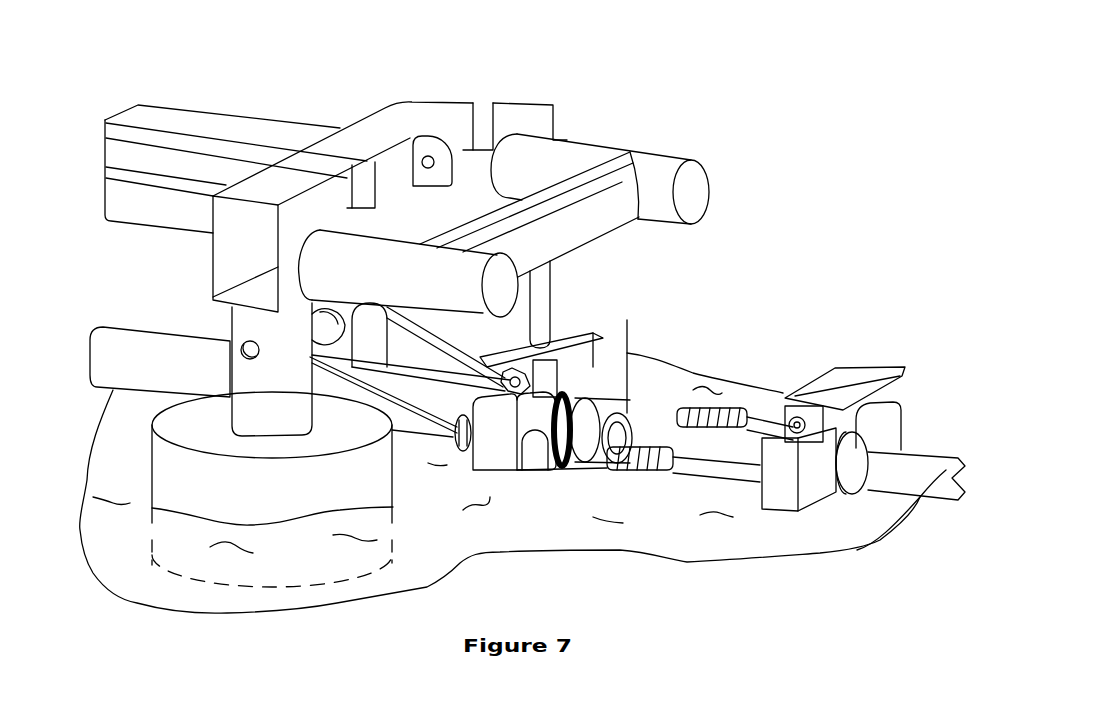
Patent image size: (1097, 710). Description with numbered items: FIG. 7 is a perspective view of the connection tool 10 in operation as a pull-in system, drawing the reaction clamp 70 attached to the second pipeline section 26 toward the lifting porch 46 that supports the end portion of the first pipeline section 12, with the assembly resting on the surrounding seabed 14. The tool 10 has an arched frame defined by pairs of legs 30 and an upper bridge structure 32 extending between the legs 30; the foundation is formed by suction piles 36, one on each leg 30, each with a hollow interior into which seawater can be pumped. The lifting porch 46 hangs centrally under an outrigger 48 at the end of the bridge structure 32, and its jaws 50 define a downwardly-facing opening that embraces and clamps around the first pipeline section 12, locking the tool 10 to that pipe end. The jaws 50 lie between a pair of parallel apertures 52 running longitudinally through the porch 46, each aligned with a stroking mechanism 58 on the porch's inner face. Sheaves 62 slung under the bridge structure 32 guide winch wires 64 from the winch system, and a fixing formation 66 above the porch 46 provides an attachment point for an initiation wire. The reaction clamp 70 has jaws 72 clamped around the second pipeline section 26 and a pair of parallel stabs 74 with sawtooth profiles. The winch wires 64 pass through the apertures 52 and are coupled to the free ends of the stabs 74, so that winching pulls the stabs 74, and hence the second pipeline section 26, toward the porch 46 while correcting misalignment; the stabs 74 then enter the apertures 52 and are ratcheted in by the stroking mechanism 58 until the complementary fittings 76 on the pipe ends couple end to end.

The connection tool 10 is at (85, 83).
The first pipeline section 12 is at (113, 345).
The fabric 14 is at (130, 577).
The second pipeline section 26 is at (913, 467).
The legs 30 is at (230, 323).
The bridge structure 32 is at (245, 123).
The suction pile 36 is at (167, 473).
The lifting porch 46 is at (493, 453).
The outrigger 48 is at (613, 170).
The jaws 50 is at (567, 457).
The apertures 52 is at (530, 457).
The stroking mechanism 58 is at (459, 453).
The sheaves 62 is at (327, 322).
The winch wires 64 is at (460, 357).
The fixing formation 66 is at (423, 143).
The reaction clamp 70 is at (810, 477).
The jaws 72 is at (847, 480).
The stabs 74 is at (717, 403).
The complementary fittings 76 is at (733, 440).